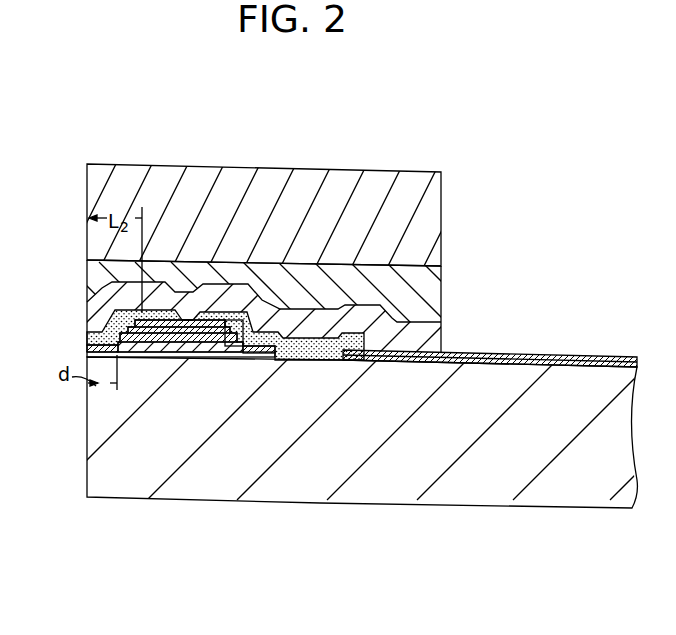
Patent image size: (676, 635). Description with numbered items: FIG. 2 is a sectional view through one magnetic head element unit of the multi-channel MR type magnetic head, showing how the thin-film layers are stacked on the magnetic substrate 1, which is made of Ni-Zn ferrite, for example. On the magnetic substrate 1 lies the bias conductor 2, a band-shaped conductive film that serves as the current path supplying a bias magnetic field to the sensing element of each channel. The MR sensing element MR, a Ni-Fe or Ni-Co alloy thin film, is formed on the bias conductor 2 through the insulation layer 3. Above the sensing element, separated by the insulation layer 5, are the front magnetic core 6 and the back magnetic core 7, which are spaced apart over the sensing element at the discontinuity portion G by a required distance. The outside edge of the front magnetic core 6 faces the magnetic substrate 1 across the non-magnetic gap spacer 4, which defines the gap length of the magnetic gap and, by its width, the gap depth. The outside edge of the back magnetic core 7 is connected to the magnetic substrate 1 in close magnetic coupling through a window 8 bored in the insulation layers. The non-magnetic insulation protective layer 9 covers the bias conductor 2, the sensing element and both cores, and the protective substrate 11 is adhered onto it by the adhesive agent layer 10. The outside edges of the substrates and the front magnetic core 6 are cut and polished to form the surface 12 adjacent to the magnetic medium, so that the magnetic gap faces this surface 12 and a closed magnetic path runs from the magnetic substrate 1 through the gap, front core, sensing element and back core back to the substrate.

The magnetic substrate 1 is at (462, 492).
The bias conductor 2 is at (171, 357).
The insulation layer 3 is at (217, 357).
The gap spacer 4 is at (134, 357).
The insulation layer 5 is at (185, 320).
The front magnetic core 6 is at (107, 331).
The back magnetic core 7 is at (330, 362).
The window 8 is at (87, 352).
The non-magnetic insulation protective layer 9 is at (441, 334).
The adhesive agent layer 10 is at (441, 288).
The protective substrate 11 is at (441, 236).
The surface opposite to the magnetic medium 12 is at (87, 260).
The discontinuity portion G is at (215, 313).
The MR sensing element MR is at (282, 266).